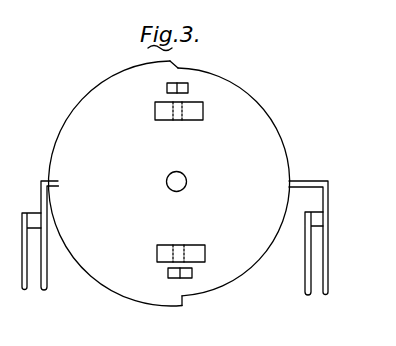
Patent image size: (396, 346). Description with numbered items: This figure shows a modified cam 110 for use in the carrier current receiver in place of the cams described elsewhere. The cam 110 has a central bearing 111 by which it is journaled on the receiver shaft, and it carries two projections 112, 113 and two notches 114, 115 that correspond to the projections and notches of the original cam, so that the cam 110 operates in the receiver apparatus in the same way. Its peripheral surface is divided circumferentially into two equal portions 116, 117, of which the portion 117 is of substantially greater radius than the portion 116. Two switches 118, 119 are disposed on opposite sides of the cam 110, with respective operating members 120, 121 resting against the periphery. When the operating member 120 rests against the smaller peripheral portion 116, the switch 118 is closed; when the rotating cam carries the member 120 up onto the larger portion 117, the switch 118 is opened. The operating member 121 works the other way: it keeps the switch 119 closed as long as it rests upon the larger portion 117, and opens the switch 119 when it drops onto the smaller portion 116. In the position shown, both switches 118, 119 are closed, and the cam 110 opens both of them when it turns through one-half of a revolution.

The cam 110 is at (178, 183).
The bearing 111 is at (186, 184).
The projection 112 is at (164, 118).
The projection 113 is at (173, 245).
The notch 114 is at (188, 88).
The notch 115 is at (192, 273).
The peripheral portion 116 is at (285, 145).
The peripheral portion 117 is at (83, 108).
The switch 118 is at (316, 212).
The switch 119 is at (35, 213).
The operating member 120 is at (304, 181).
The operating member 121 is at (58, 180).